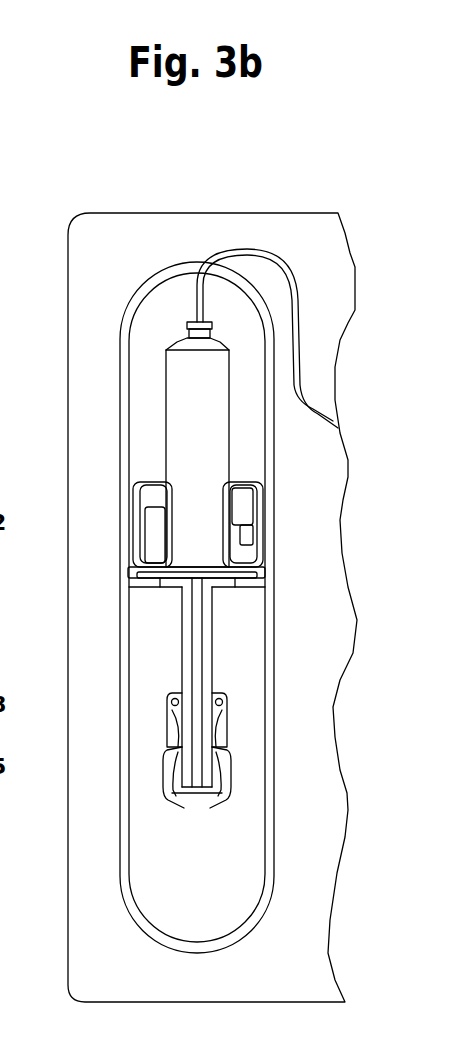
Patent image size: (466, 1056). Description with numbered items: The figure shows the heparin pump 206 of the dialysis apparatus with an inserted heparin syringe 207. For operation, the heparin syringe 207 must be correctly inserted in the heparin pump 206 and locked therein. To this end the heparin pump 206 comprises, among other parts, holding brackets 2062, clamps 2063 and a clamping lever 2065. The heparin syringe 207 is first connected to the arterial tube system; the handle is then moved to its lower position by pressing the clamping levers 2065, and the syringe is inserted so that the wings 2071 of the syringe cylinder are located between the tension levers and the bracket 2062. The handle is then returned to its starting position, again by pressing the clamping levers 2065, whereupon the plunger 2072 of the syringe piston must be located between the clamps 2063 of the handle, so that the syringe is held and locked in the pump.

The heparin pump 206 is at (135, 277).
The heparin syringe 207 is at (183, 396).
The holding brackets 2062 is at (168, 496).
The wings 2071 is at (150, 545).
The plunger 2072 is at (188, 586).
The clamps 2063 is at (165, 715).
The clamping lever 2065 is at (165, 776).